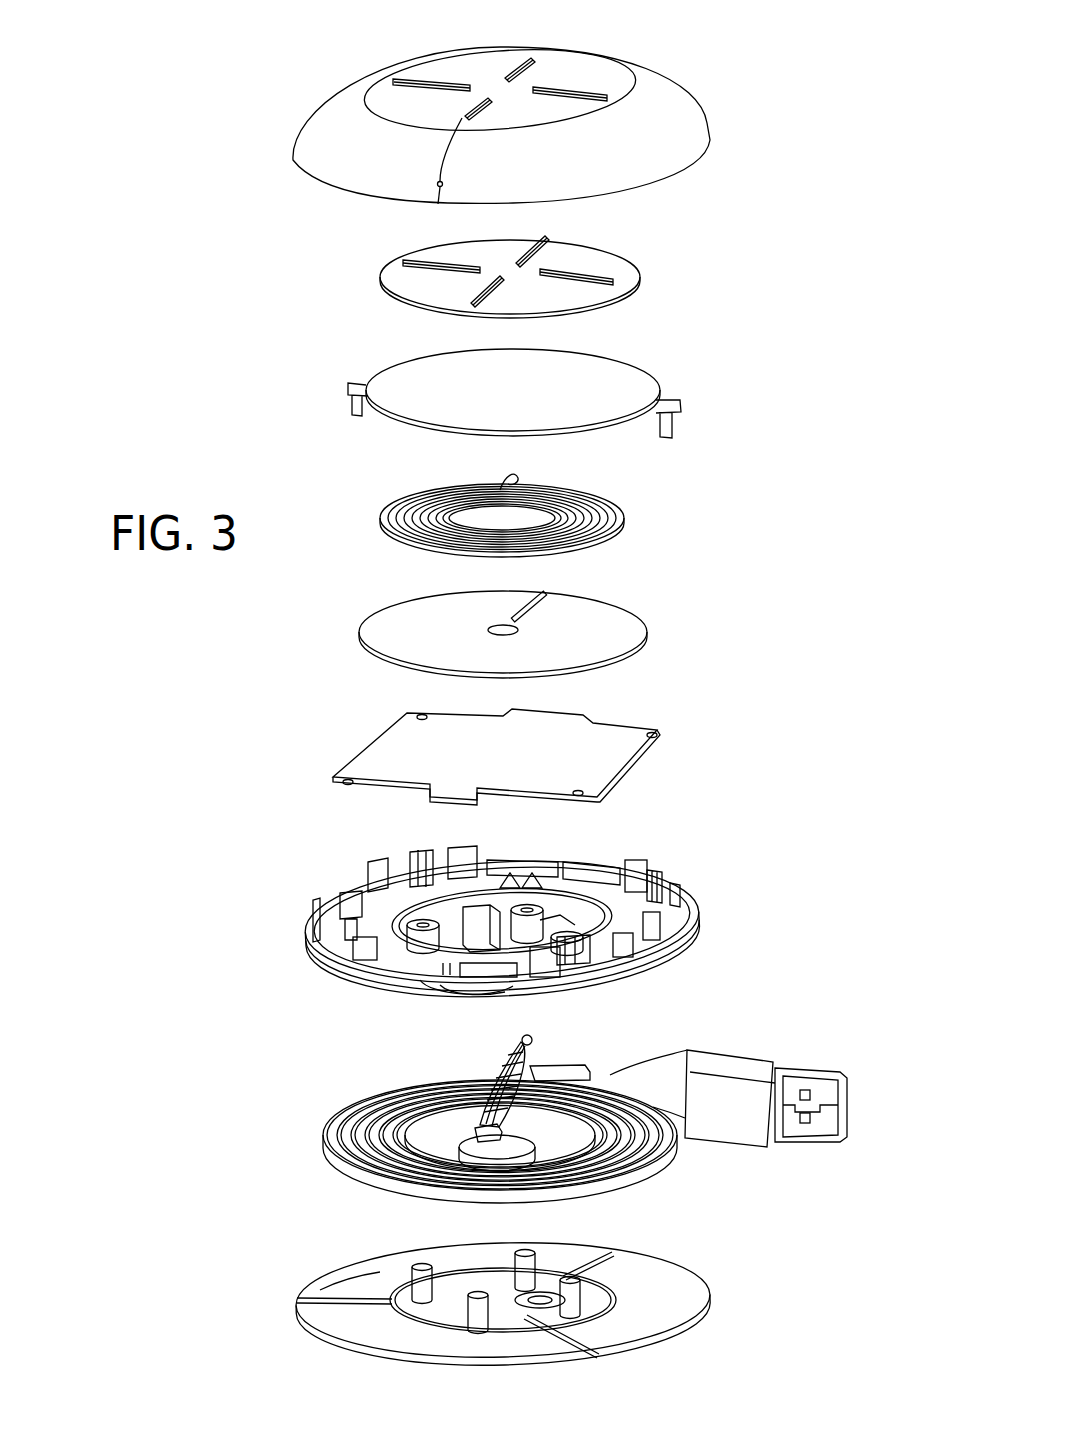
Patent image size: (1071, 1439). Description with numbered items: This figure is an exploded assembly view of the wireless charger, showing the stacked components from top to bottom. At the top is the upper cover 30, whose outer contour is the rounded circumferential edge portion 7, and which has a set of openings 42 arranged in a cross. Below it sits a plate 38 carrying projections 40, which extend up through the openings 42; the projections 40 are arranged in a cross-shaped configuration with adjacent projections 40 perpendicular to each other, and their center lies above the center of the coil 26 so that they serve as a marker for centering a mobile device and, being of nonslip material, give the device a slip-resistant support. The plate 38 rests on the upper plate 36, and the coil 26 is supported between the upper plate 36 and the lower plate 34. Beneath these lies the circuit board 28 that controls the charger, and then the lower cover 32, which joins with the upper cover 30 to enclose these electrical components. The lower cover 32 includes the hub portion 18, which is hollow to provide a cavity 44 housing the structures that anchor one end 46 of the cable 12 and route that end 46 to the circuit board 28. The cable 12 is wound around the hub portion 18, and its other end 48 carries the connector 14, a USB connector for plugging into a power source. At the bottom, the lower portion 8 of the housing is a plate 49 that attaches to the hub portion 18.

The rounded circumferential edge portion 7 is at (327, 123).
The upper cover 30 is at (683, 110).
The openings 42 is at (517, 64).
The plate 38 is at (627, 273).
The projections 40 is at (433, 268).
The upper plate 36 is at (637, 375).
The coil 26 is at (617, 508).
The lower plate 34 is at (637, 620).
The circuit board 28 is at (608, 737).
The lower cover 32 is at (700, 928).
The cavity 44 is at (567, 918).
The hub portion 18 is at (440, 993).
The cable 12 is at (653, 1160).
The one end 46 is at (518, 1060).
The other end 48 is at (597, 1078).
The connector 14 is at (777, 1045).
The lower portion 8 is at (713, 1290).
The plate 49 is at (348, 1273).